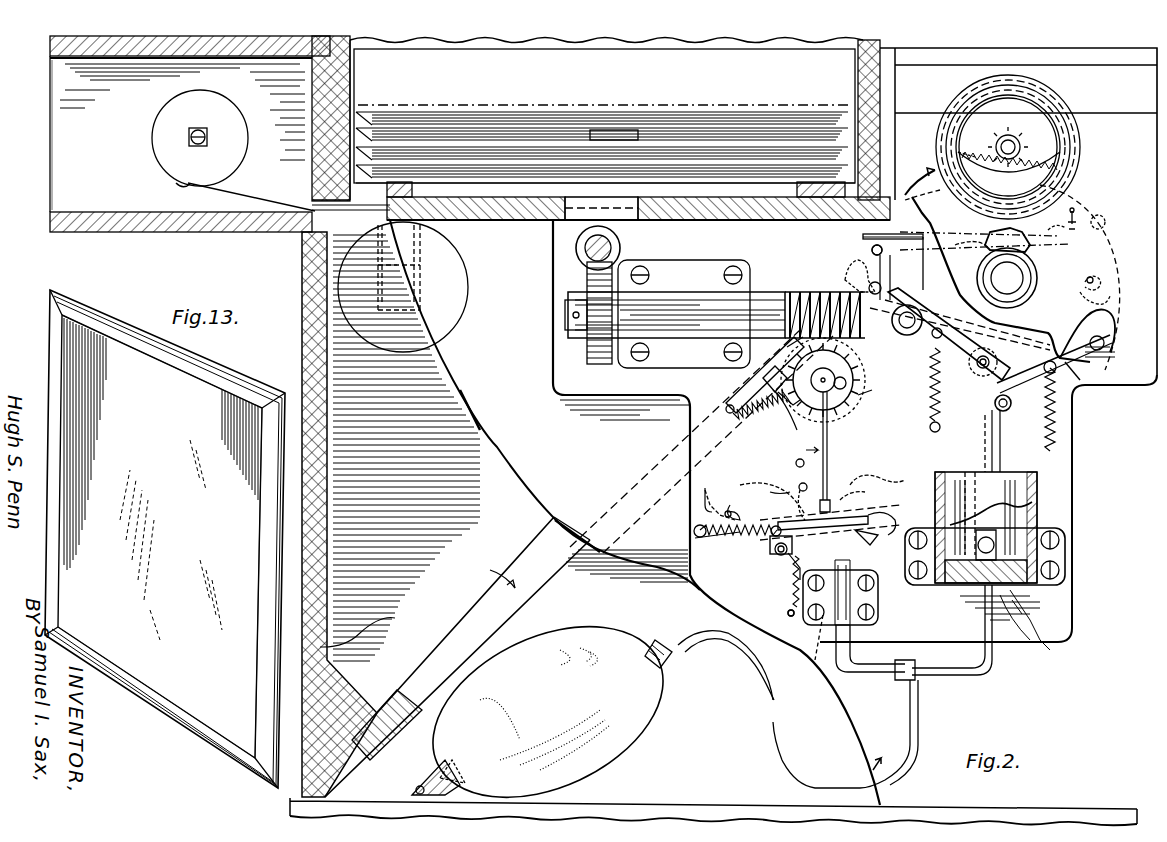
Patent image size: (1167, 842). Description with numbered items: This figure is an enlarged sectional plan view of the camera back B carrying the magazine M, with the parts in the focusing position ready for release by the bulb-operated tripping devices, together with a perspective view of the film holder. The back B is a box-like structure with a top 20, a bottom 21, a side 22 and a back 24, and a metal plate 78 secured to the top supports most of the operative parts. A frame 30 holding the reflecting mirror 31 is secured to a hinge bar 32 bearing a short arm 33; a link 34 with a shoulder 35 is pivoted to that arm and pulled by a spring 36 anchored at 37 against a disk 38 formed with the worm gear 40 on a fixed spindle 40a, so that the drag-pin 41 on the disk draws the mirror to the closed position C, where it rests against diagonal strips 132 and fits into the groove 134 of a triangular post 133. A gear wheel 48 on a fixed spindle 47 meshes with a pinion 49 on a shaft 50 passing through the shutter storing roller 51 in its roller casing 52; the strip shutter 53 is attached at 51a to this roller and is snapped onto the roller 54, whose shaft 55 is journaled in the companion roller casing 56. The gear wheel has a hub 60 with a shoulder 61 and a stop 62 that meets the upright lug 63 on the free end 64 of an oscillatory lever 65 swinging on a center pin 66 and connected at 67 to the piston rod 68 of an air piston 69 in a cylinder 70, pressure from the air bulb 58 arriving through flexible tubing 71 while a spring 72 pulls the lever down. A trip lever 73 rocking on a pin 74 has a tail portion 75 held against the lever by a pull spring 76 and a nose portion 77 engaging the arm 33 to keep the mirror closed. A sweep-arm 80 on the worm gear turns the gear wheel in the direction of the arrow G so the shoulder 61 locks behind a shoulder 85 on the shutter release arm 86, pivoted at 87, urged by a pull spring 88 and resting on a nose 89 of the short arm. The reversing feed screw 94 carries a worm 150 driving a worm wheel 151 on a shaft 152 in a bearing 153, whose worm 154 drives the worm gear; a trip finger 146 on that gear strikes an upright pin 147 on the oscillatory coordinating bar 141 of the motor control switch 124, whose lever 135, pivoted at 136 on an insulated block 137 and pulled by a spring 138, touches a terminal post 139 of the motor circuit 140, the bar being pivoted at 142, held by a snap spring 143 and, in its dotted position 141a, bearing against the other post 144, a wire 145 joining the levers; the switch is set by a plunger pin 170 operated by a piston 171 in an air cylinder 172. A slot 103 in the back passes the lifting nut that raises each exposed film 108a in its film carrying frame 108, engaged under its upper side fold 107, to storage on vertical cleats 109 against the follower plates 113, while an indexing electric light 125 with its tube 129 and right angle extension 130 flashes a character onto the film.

In FIG. 2, the top 20 is at (545, 405).
In FIG. 2, the bottom 21 is at (391, 514).
In FIG. 2, the side 22 is at (368, 629).
In FIG. 2, the back 24 is at (853, 239).
In FIG. 2, the frame 30 is at (470, 630).
In FIG. 2, the reflecting mirror 31 is at (397, 692).
In FIG. 2, the hinge bar 32 is at (863, 236).
In FIG. 2, the short horizontal arm 33 is at (892, 284).
In FIG. 2, the link 34 is at (807, 379).
In FIG. 2, the shoulder 35 is at (795, 418).
In FIG. 2, the pull spring 36 is at (765, 430).
In FIG. 2, the anchor 37 is at (772, 491).
In FIG. 2, the disk 38 is at (780, 362).
In FIG. 2, the worm gear 40 is at (858, 386).
In FIG. 2, the fixed spindle 40a is at (840, 382).
In FIG. 2, the drag-pin 41 is at (836, 440).
In FIG. 2, the fixed spindle 47 is at (1012, 278).
In FIG. 2, the gear wheel 48 is at (961, 145).
In FIG. 2, the gear pinion 49 is at (1020, 140).
In FIG. 2, the rotary shaft 50 is at (1002, 160).
In FIG. 2, the shutter storing roller 51 is at (1058, 152).
In FIG. 2, the shutter attachment point 51a is at (1016, 100).
In FIG. 2, the roller casing 52 is at (1135, 211).
In FIG. 2, the strip shutter 53 is at (292, 208).
In FIG. 2, the roller 54 is at (160, 126).
In FIG. 2, the shaft 55 is at (190, 134).
In FIG. 2, the companion roller casing 56 is at (79, 135).
In FIG. 2, the air bulb 58 is at (548, 711).
In FIG. 2, the hub 60 is at (1055, 255).
In FIG. 2, the shoulder 61 is at (985, 262).
In FIG. 2, the stop 62 is at (1095, 358).
In FIG. 2, the upright lug 63 is at (1104, 280).
In FIG. 2, the free end 64 is at (1080, 305).
In FIG. 2, the oscillatory lever 65 is at (1068, 368).
In FIG. 2, the center pin 66 is at (1105, 344).
In FIG. 2, the pivotal connection 67 is at (1012, 404).
In FIG. 2, the piston rod 68 is at (990, 455).
In FIG. 2, the air piston 69 is at (1036, 640).
In FIG. 2, the cylinder 70 is at (986, 527).
In FIG. 2, the flexible tubing 71 is at (985, 676).
In FIG. 2, the spring 72 is at (1056, 435).
In FIG. 2, the trip lever 73 is at (963, 334).
In FIG. 2, the pin 74 is at (912, 316).
In FIG. 2, the tail portion 75 is at (978, 370).
In FIG. 2, the pull spring 76 is at (878, 418).
In FIG. 2, the nose portion 77 is at (913, 388).
In FIG. 2, the metal plate 78 is at (606, 400).
In FIG. 2, the sweep-arm 80 is at (850, 264).
In FIG. 2, the shoulder 85 is at (1019, 243).
In FIG. 2, the shutter release arm 86 is at (1088, 205).
In FIG. 2, the pivot 87 is at (1106, 222).
In FIG. 2, the pull spring 88 is at (1076, 232).
In FIG. 2, the nose 89 is at (880, 255).
In FIG. 2, the reversing feed screw 94 is at (575, 244).
In FIG. 2, the slot 103 is at (630, 220).
In FIG. 13, the upper side fold 107 is at (166, 358).
In FIG. 13, the film carrying frame 108 is at (161, 479).
In FIG. 2, the film carrying frame 108 is at (656, 138).
In FIG. 2, the exposed film 108a is at (615, 130).
In FIG. 2, the vertical cleats 109 is at (400, 186).
In FIG. 2, the follower plates 113 is at (578, 104).
In FIG. 2, the motor control switch 124 is at (877, 498).
In FIG. 2, the electric light 125 is at (460, 318).
In FIG. 2, the downwardly directed tube 129 is at (420, 298).
In FIG. 2, the right angle extension 130 is at (420, 248).
In FIG. 2, the diagonal strips 132 is at (542, 545).
In FIG. 2, the triangular post 133 is at (407, 778).
In FIG. 2, the groove 134 is at (410, 760).
In FIG. 2, the lever 135 is at (792, 585).
In FIG. 2, the pivot 136 is at (768, 554).
In FIG. 2, the insulated block 137 is at (770, 575).
In FIG. 2, the pull spring 138 is at (771, 617).
In FIG. 2, the terminal post 139 is at (882, 540).
In FIG. 2, the motor circuit 140 is at (705, 492).
In FIG. 2, the oscillatory coordinating bar 141 is at (870, 480).
In FIG. 2, the dotted position 141a is at (731, 493).
In FIG. 2, the pivot 142 is at (770, 535).
In FIG. 2, the snap spring 143 is at (700, 528).
In FIG. 2, the post 144 is at (722, 512).
In FIG. 2, the wire 145 is at (720, 538).
In FIG. 2, the trip finger 146 is at (826, 478).
In FIG. 2, the upright pin 147 is at (797, 496).
In FIG. 2, the worm 150 is at (587, 262).
In FIG. 2, the worm wheel 151 is at (587, 352).
In FIG. 2, the shaft 152 is at (565, 318).
In FIG. 2, the bearing 153 is at (675, 295).
In FIG. 2, the worm 154 is at (800, 292).
In FIG. 2, the plunger pin 170 is at (858, 598).
In FIG. 2, the piston 171 is at (820, 620).
In FIG. 2, the air cylinder 172 is at (832, 672).
In FIG. 2, the back B is at (626, 314).
In FIG. 2, the closed position C is at (490, 570).
In FIG. 2, the arrow G is at (915, 178).
In FIG. 2, the magazine M is at (865, 95).